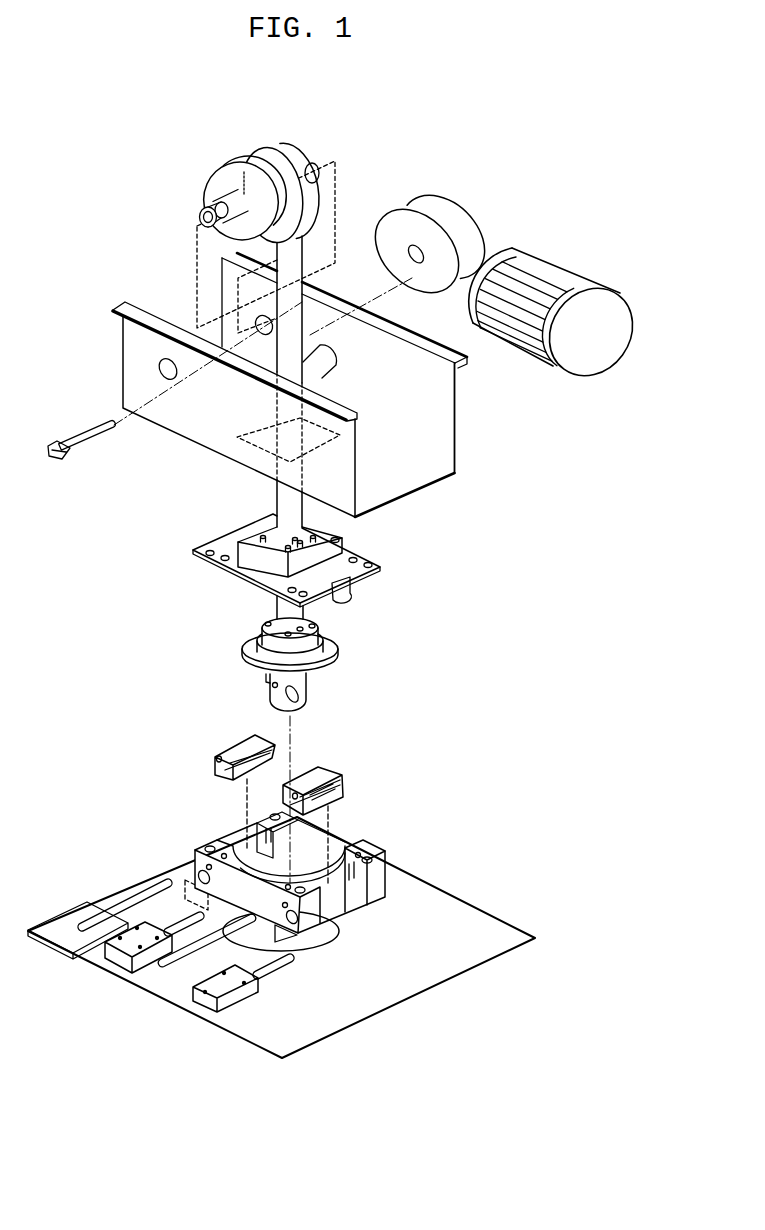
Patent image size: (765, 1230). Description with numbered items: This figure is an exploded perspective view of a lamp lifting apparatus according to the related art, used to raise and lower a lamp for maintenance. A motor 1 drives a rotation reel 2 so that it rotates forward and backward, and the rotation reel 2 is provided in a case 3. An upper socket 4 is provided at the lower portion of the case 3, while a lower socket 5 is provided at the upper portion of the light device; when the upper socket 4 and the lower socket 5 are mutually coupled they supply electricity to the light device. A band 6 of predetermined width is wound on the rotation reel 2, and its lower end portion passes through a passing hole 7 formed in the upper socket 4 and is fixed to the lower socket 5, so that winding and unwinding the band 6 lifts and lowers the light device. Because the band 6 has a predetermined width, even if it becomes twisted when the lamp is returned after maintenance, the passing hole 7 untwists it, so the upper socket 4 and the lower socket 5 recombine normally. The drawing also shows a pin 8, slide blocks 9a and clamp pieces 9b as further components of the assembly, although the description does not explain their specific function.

The motor 1 is at (532, 270).
The rotation reel 2 is at (212, 182).
The case 3 is at (138, 342).
The upper socket 4 is at (323, 560).
The lower socket 5 is at (315, 650).
The band 6 is at (291, 238).
The passing hole 7 is at (205, 567).
The pin 8 is at (53, 455).
The slide blocks 9a is at (113, 957).
The clamp pieces 9b is at (217, 753).